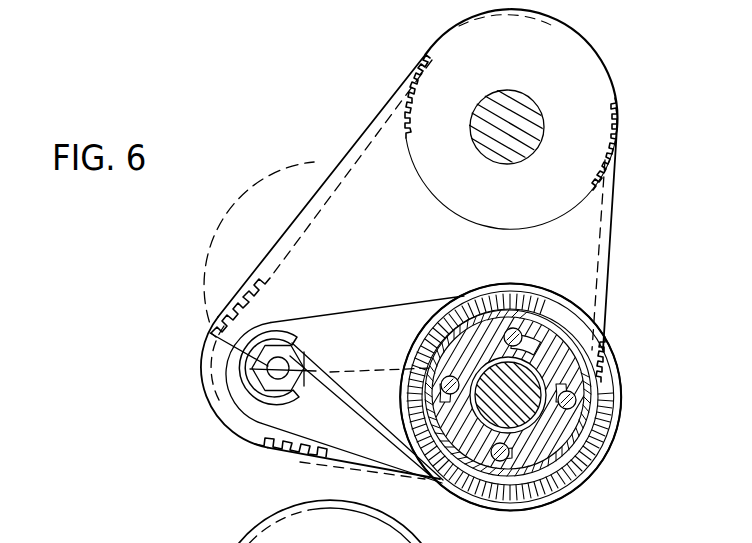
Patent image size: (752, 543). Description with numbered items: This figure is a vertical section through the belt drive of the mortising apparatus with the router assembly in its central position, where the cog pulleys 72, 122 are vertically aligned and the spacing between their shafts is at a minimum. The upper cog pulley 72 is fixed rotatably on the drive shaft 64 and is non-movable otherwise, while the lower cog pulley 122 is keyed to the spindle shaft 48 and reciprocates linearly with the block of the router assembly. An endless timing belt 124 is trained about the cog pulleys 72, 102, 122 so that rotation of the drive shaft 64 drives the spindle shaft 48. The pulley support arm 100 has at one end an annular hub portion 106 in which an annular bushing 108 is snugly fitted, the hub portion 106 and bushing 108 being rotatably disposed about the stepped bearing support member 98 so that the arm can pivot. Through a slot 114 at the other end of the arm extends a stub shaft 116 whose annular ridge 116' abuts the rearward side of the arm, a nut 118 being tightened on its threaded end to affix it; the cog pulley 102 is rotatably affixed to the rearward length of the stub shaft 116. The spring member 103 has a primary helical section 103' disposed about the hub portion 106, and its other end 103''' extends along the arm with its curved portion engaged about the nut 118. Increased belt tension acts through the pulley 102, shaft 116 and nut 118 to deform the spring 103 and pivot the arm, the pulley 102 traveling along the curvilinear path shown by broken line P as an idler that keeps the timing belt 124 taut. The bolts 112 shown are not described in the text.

The curvilinear path P is at (215, 233).
The cog pulley 72 is at (408, 158).
The drive shaft 64 is at (502, 150).
The timing belt 124 is at (615, 166).
The other end of the metal rod 103''' is at (295, 398).
The cog pulley 102 is at (274, 304).
The pulley support arm 100 is at (400, 336).
The slot 114 is at (310, 381).
The nut 118 is at (289, 395).
The stub shaft 116 is at (304, 349).
The annular ridge 116' is at (310, 356).
The primary section 103' is at (527, 397).
The spring member 103 is at (540, 397).
The stepped bearing support member 98 is at (430, 336).
The annular bushing 108 is at (520, 264).
The annular hub portion 106 is at (497, 262).
The spindle shaft 48 is at (521, 377).
The clamping bolts 112 is at (441, 387).
The cog pulley 122 is at (580, 370).